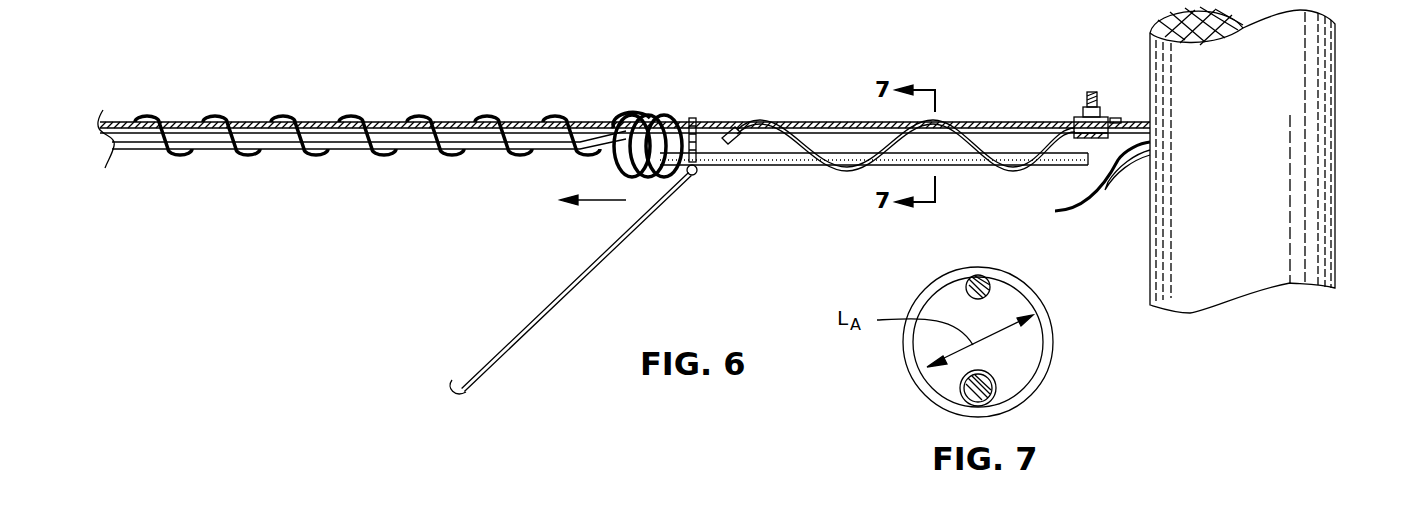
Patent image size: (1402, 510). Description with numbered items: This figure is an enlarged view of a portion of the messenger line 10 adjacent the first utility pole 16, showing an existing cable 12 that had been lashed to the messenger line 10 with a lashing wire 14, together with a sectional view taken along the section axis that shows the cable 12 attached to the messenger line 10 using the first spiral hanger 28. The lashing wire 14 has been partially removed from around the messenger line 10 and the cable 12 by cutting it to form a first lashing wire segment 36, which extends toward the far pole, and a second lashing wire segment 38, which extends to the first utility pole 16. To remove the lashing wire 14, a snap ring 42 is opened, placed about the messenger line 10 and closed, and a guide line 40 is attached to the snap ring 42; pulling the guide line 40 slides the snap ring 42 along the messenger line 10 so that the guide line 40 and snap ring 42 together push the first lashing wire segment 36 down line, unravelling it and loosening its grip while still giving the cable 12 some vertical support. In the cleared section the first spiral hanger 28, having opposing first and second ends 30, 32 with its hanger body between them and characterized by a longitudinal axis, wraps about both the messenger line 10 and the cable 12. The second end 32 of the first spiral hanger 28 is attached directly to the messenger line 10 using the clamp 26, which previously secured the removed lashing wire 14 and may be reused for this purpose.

In FIG. 6, the messenger line 10 is at (257, 121).
In FIG. 7, the messenger line 10 is at (990, 287).
In FIG. 6, the cable 12 is at (222, 151).
In FIG. 7, the cable 12 is at (990, 373).
In FIG. 6, the lashing wire 14 is at (313, 151).
In FIG. 6, the first utility pole 16 is at (1325, 84).
In FIG. 6, the clamp 26 is at (1082, 116).
In FIG. 6, the first spiral hanger 28 is at (819, 131).
In FIG. 7, the first spiral hanger 28 is at (1035, 298).
In FIG. 6, the first end 30 is at (728, 147).
In FIG. 6, the second end 32 is at (1117, 117).
In FIG. 6, the first lashing wire segment 36 is at (655, 117).
In FIG. 6, the second lashing wire segment 38 is at (1081, 204).
In FIG. 6, the guide line 40 is at (524, 327).
In FIG. 6, the snap ring 42 is at (706, 120).